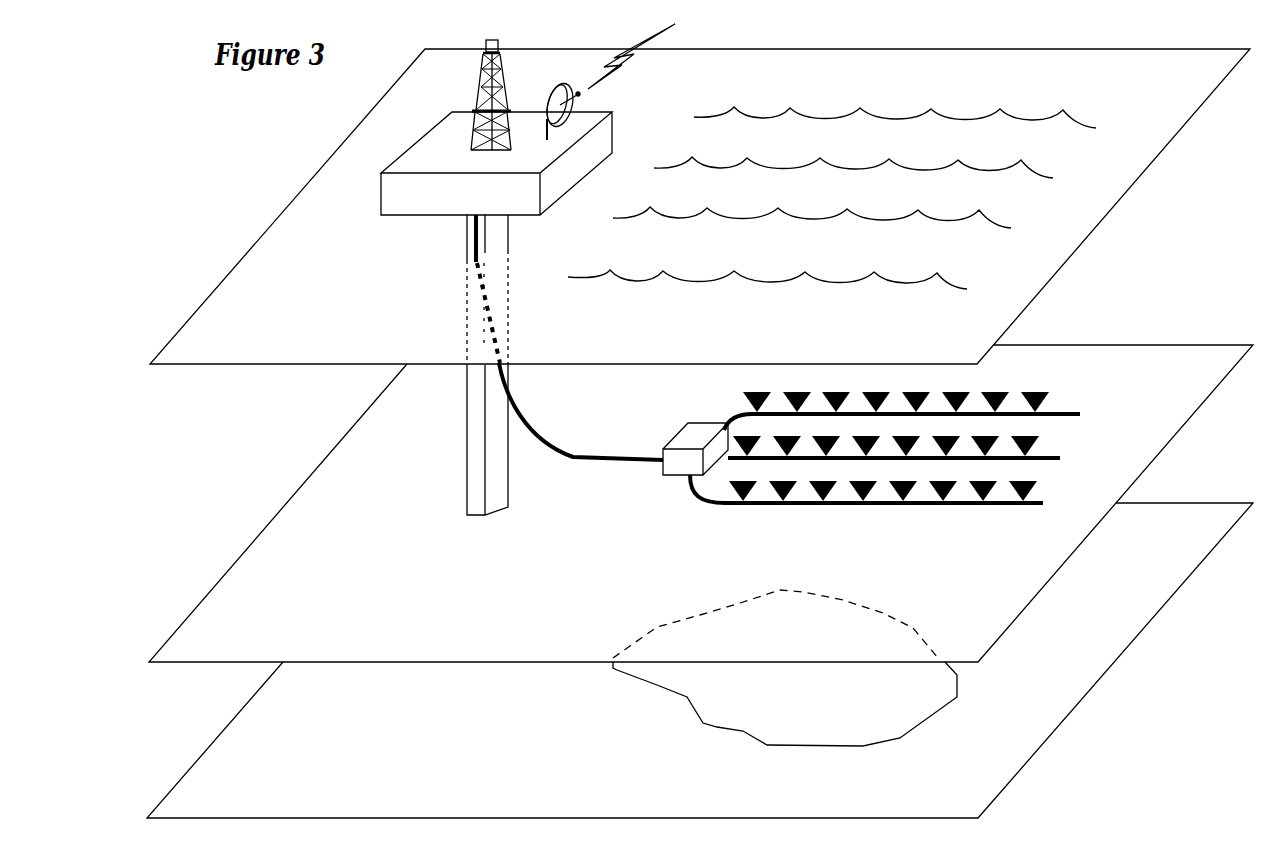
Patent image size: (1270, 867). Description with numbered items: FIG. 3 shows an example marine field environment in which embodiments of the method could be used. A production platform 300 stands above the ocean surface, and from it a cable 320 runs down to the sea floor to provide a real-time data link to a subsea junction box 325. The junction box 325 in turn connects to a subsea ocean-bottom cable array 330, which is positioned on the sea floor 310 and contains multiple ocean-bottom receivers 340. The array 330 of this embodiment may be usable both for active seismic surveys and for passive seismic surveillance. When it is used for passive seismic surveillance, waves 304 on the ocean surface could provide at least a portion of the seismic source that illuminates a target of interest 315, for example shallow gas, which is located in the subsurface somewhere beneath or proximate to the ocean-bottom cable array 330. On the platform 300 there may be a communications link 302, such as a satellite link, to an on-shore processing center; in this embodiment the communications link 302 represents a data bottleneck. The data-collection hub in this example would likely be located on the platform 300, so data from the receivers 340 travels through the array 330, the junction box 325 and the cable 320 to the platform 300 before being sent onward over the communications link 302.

The production platform 300 is at (427, 143).
The communications link 302 is at (553, 82).
The waves 304 is at (740, 162).
The sea floor 310 is at (1133, 350).
The target of interest 315 is at (688, 707).
The cable 320 is at (542, 430).
The subsea junction box 325 is at (705, 428).
The ocean-bottom cable array 330 is at (1080, 413).
The ocean-bottom receivers 340 is at (983, 507).